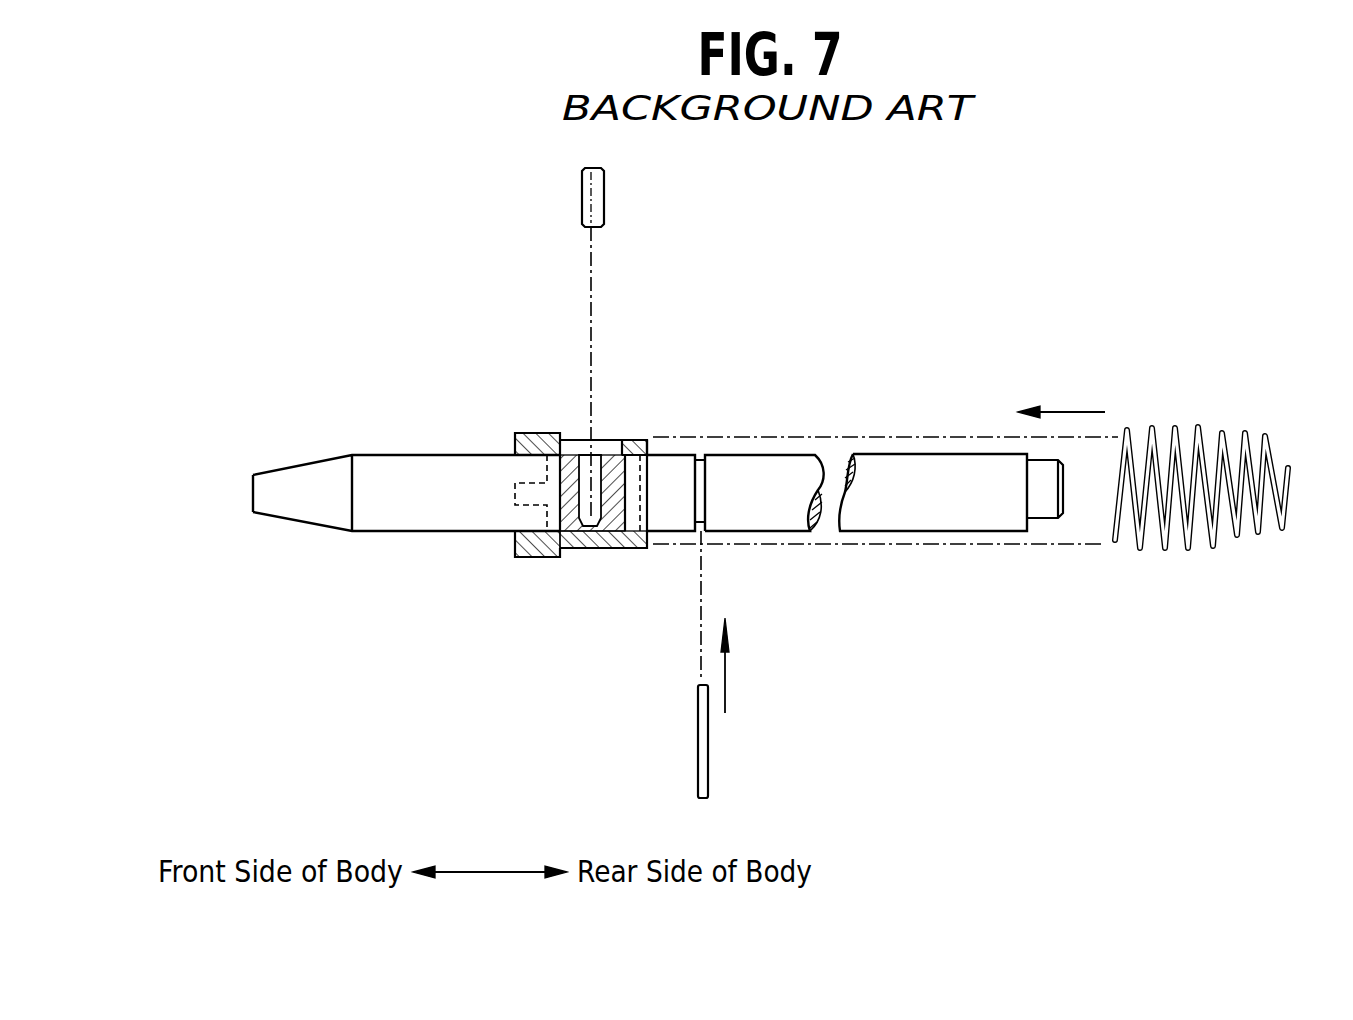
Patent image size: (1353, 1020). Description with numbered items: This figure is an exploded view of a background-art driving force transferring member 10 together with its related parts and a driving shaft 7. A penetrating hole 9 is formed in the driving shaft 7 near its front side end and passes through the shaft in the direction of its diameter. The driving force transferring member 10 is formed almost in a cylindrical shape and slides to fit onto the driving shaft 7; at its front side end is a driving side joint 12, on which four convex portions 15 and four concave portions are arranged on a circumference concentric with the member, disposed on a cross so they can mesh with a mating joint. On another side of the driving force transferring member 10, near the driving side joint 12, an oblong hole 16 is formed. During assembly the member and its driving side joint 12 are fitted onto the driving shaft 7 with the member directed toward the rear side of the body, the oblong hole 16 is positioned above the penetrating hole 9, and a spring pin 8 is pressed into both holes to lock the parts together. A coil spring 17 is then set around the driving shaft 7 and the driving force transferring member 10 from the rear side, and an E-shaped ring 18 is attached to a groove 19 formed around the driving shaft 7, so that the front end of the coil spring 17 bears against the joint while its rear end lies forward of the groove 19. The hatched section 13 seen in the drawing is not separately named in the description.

The driving shaft 7 is at (422, 518).
The spring pin 8 is at (605, 190).
The penetrating hole 9 is at (590, 545).
The driving force transferring member 10 is at (564, 407).
The driving side joint 12 is at (518, 557).
The bushing sleeve 13 is at (632, 547).
The convex portion 15 is at (515, 432).
The oblong hole 16 is at (608, 443).
The coil spring 17 is at (1198, 430).
The E-shaped ring 18 is at (710, 757).
The groove 19 is at (700, 452).